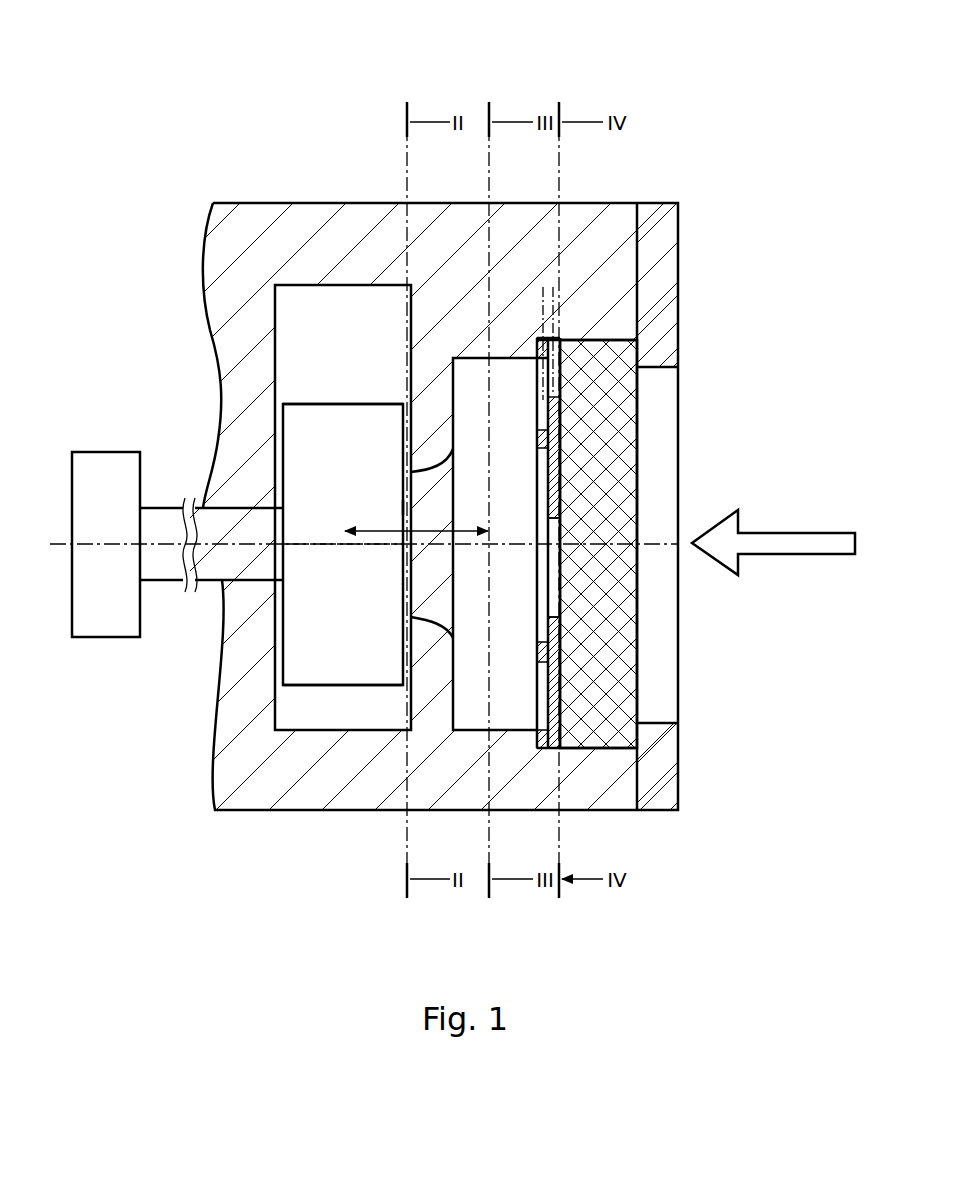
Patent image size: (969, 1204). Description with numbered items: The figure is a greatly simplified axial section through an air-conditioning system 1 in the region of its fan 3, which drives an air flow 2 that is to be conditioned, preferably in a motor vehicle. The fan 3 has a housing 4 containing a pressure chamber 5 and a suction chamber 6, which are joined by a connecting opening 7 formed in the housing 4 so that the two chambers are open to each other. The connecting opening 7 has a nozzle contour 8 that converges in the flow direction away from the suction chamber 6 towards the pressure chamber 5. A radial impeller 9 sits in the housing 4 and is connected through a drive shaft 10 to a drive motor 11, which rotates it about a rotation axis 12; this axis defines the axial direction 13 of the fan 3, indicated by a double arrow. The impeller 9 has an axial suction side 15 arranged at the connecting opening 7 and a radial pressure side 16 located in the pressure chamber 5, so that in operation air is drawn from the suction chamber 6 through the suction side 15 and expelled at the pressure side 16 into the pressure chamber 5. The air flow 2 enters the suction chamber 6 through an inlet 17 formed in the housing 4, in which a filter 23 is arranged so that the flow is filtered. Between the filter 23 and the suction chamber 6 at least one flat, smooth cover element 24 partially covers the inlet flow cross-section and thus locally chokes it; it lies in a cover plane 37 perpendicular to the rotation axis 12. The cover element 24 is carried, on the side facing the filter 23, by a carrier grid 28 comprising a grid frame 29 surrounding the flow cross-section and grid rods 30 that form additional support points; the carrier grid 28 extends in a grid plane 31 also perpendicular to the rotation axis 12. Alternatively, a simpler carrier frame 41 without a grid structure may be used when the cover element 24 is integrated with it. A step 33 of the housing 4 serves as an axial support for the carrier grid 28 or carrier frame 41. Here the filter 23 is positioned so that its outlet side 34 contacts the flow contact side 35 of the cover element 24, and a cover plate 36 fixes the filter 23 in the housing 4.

The air-conditioning system 1 is at (768, 168).
The air flow 2 is at (793, 540).
The fan 3 is at (745, 258).
The housing 4 is at (267, 202).
The pressure chamber 5 is at (377, 336).
The suction chamber 6 is at (509, 595).
The connecting opening 7 is at (437, 595).
The nozzle contour 8 is at (420, 472).
The impeller 9 is at (340, 690).
The drive shaft 10 is at (157, 520).
The drive motor 11 is at (103, 466).
The rotation axis 12 is at (315, 545).
The axial direction 13 is at (375, 530).
The axial suction side 15 is at (405, 507).
The radial pressure side 16 is at (345, 402).
The inlet 17 is at (654, 438).
The filter 23 is at (643, 658).
The cover element 24 is at (546, 626).
The carrier grid 28 is at (538, 756).
The grid frame 29 is at (542, 746).
The grid rods 30 is at (537, 440).
The grid plane 31 is at (538, 285).
The step 33 is at (538, 745).
The outlet side 34 is at (556, 545).
The flow contact side 35 is at (587, 622).
The cover plate 36 is at (655, 216).
The cover plane 37 is at (552, 330).
The carrier frame 41 is at (568, 802).